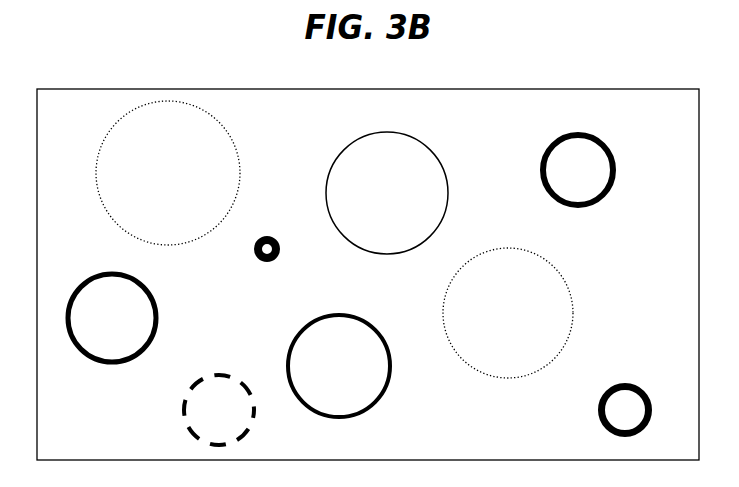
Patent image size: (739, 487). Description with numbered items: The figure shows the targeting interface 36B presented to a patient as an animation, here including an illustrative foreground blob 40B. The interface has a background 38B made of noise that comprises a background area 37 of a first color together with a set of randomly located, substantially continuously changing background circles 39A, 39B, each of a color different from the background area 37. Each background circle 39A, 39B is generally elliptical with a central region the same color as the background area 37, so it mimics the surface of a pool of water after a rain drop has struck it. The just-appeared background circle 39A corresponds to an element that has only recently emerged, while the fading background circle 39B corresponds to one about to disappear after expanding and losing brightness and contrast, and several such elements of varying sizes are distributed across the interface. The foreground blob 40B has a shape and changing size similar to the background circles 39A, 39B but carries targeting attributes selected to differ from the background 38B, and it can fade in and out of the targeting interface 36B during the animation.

The targeting interface 36B is at (367, 89).
The background area 37 is at (662, 256).
The background 38B is at (601, 116).
The background figure 39A is at (265, 236).
The background figure 39B is at (240, 143).
The foreground blob 40B is at (225, 375).